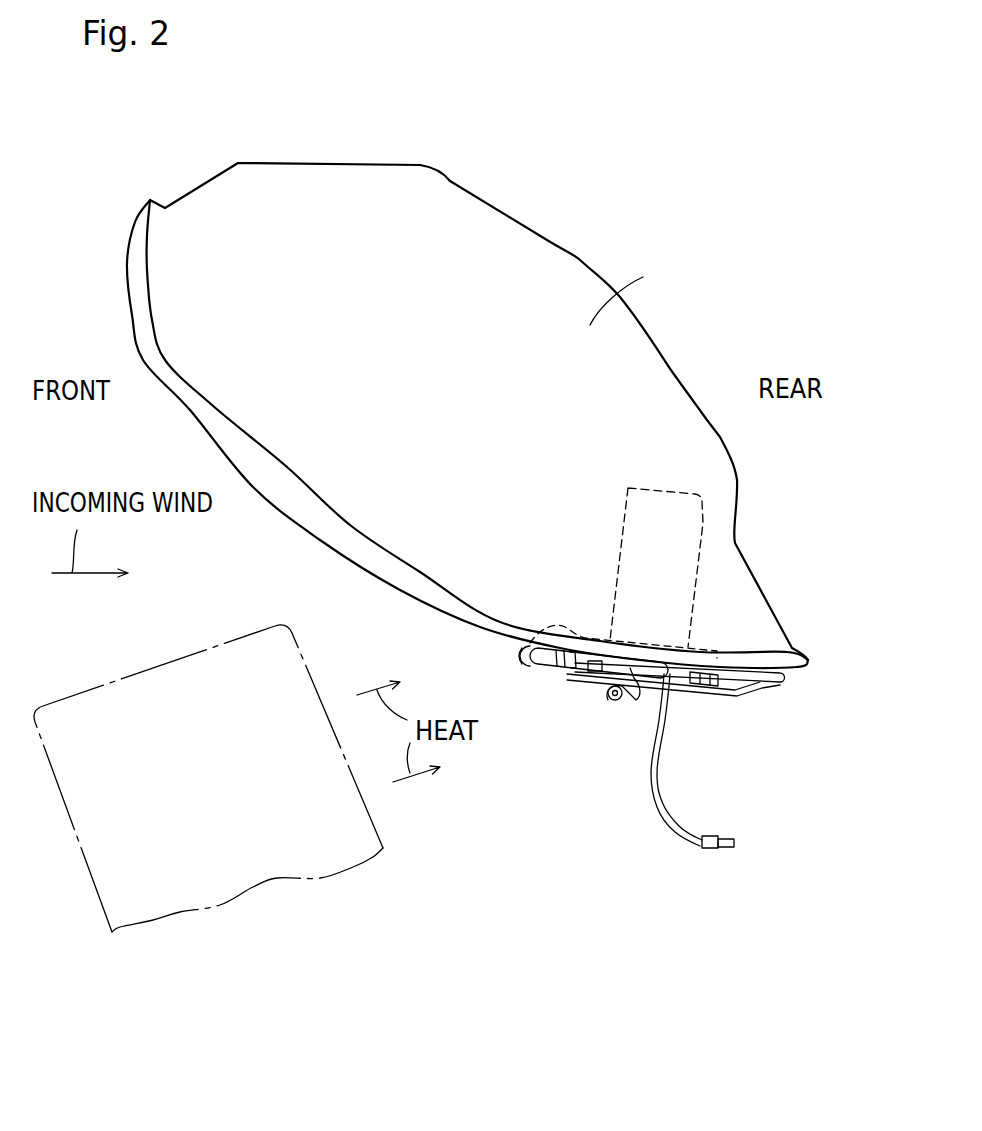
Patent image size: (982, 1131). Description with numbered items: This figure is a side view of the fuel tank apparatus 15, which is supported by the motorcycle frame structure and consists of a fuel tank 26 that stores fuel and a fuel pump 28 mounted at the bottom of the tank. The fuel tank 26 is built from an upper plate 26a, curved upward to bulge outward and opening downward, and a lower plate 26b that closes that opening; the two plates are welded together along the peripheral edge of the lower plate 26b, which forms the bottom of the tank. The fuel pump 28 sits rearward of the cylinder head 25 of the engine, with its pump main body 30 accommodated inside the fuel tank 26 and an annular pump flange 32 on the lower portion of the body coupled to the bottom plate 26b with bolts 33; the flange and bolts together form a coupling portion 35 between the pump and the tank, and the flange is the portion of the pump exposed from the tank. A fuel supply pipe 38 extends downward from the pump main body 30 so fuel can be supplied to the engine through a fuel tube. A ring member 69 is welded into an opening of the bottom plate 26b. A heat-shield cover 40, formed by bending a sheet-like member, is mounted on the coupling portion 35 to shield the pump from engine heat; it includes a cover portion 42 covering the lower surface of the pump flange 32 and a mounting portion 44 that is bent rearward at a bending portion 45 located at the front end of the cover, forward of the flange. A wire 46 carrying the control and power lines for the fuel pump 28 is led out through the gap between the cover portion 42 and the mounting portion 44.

The fuel tank apparatus 15 is at (699, 335).
The cylinder head 25 is at (386, 838).
The fuel tank 26 is at (548, 240).
The upper plate 26a is at (636, 293).
The lower plate 26b is at (323, 531).
The fuel pump 28 is at (822, 495).
The pump main body 30 is at (700, 527).
The pump flange 32 is at (692, 668).
The bolts 33 is at (575, 670).
The coupling portion 35 is at (641, 675).
The fuel supply pipe 38 is at (633, 700).
The heat-shield cover 40 is at (825, 773).
The cover portion 42 is at (703, 688).
The mounting portion 44 is at (755, 685).
The bending portion 45 is at (532, 663).
The wire 46 is at (683, 847).
The ring member 69 is at (528, 629).